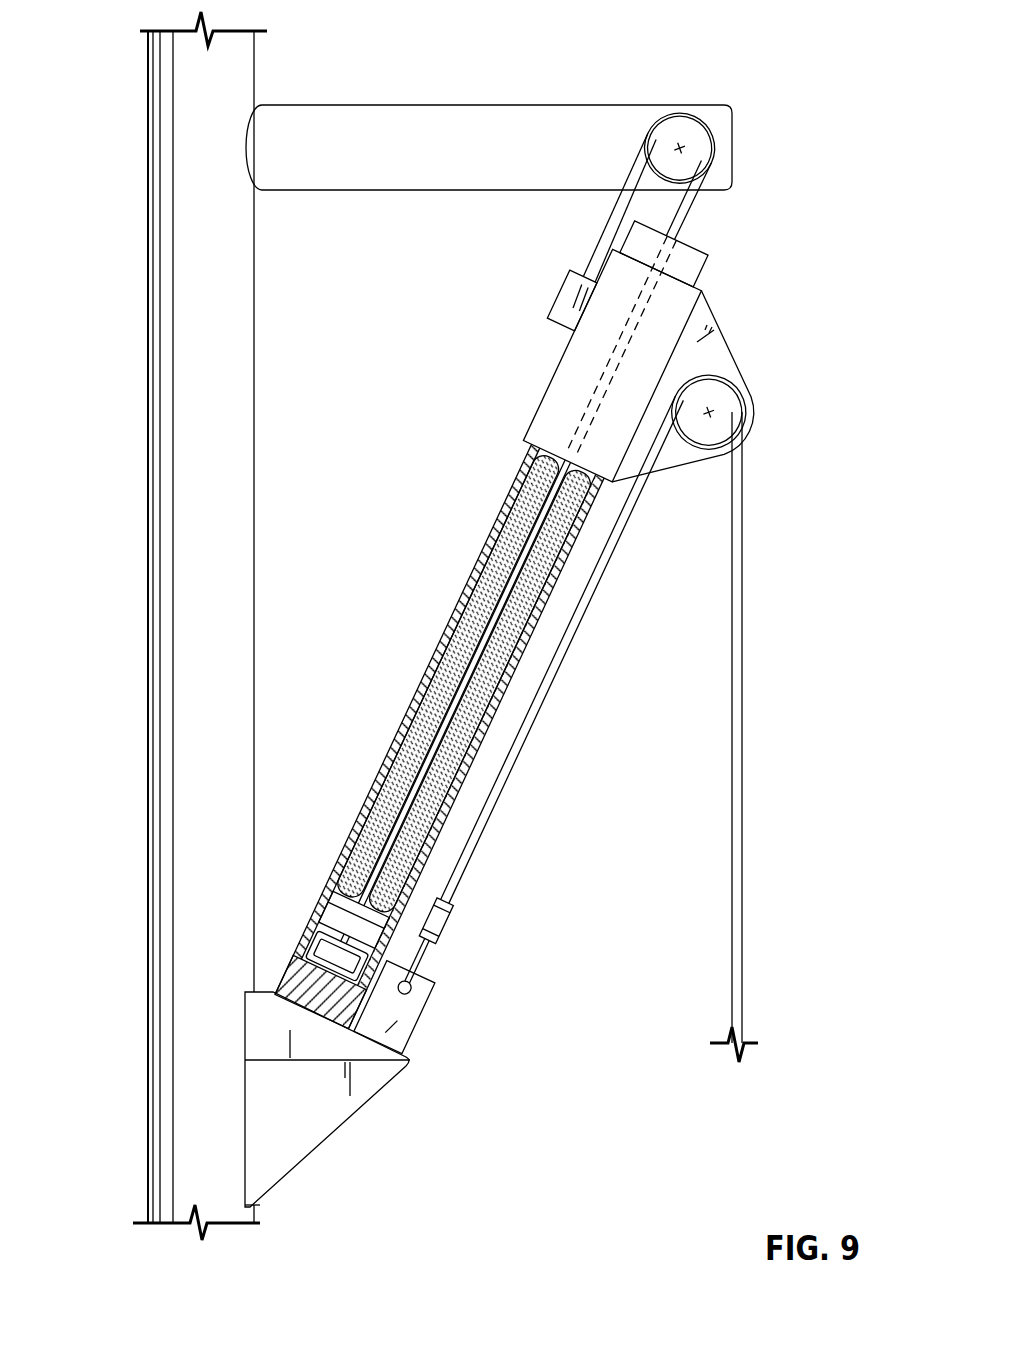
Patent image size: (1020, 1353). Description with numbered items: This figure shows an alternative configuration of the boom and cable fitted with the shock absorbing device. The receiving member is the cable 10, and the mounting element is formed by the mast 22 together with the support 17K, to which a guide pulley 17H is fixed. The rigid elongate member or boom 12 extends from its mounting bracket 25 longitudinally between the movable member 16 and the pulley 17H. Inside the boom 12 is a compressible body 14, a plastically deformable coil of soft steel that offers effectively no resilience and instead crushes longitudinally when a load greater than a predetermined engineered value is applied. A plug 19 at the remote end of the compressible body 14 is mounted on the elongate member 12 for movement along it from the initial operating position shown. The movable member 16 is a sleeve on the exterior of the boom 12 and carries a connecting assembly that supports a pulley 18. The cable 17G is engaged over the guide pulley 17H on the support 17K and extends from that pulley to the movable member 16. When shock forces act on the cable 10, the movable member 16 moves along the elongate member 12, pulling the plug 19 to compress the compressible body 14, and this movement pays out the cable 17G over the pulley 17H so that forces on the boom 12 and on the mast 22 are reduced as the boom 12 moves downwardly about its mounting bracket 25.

The cable 10 is at (542, 722).
The boom 12 is at (575, 837).
The compressible body 14 is at (413, 727).
The movable member 16 is at (536, 410).
The cable 17G is at (600, 237).
The guide pulley 17H is at (705, 148).
The support 17K is at (500, 105).
The pulley 18 is at (720, 392).
The plug 19 is at (298, 960).
The mast 22 is at (162, 470).
The mounting bracket 25 is at (270, 1115).